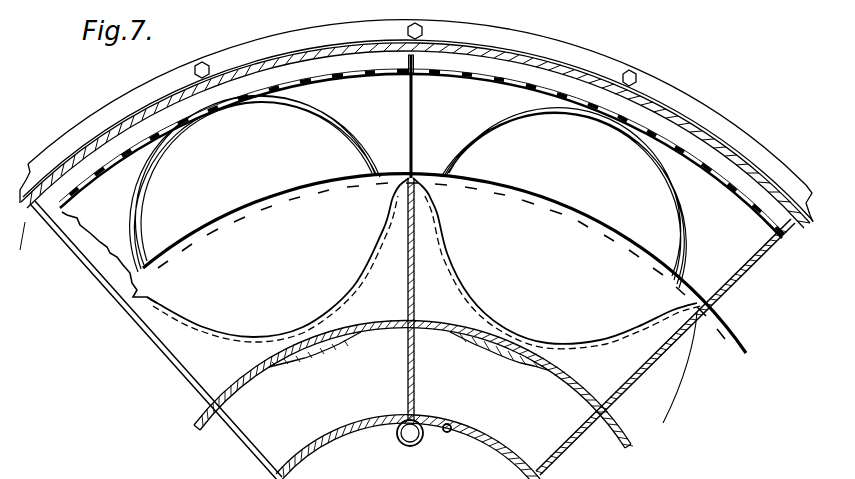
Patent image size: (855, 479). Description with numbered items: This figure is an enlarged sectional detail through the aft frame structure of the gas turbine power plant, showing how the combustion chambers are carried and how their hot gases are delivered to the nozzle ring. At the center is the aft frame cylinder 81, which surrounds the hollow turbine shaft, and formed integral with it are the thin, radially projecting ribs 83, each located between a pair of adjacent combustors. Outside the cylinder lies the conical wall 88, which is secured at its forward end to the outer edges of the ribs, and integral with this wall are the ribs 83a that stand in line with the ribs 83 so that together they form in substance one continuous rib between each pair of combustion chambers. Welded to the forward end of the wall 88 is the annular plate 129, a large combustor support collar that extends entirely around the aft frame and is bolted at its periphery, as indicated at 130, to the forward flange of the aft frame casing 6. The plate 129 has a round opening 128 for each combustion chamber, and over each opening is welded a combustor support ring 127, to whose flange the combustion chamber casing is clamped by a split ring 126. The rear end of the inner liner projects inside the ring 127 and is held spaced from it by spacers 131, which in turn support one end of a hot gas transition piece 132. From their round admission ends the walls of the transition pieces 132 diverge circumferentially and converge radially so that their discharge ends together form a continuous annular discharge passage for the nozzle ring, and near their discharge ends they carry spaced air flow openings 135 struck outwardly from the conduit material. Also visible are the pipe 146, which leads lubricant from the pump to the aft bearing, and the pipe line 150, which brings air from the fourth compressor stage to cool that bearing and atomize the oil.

The aft frame casing 6 is at (680, 117).
The aft frame cylinder 81 is at (363, 419).
The ribs 83 is at (574, 426).
The ribs 83a is at (124, 302).
The conical wall 88 is at (388, 331).
The split ring 126 is at (305, 359).
The combustor support ring 127 is at (230, 343).
The round opening 128 is at (605, 106).
The annular plate 129 is at (485, 65).
The bolted connection 130 is at (638, 72).
The spacers 131 is at (617, 337).
The hot gas transition piece 132 is at (470, 112).
The air flow openings 135 is at (600, 232).
The pipe 146 is at (448, 433).
The pipe line 150 is at (413, 446).